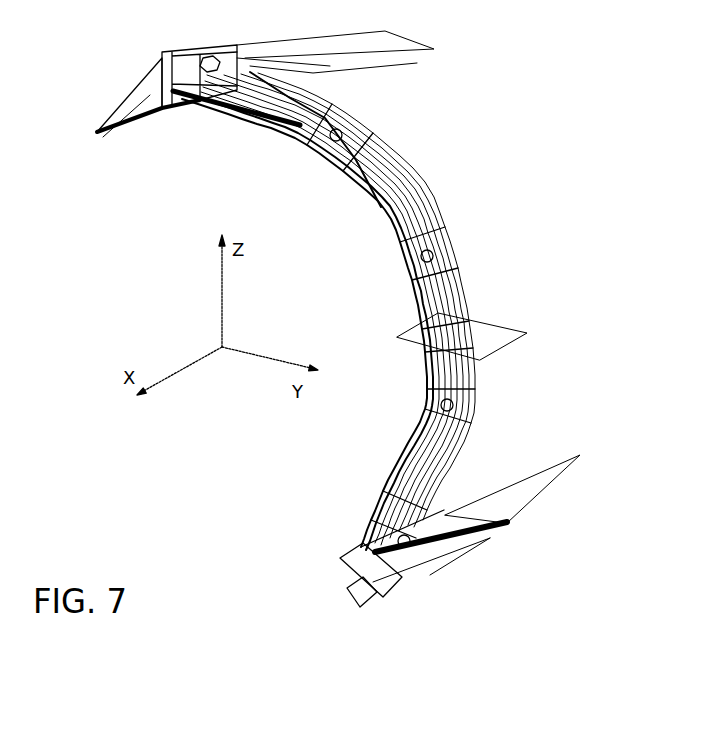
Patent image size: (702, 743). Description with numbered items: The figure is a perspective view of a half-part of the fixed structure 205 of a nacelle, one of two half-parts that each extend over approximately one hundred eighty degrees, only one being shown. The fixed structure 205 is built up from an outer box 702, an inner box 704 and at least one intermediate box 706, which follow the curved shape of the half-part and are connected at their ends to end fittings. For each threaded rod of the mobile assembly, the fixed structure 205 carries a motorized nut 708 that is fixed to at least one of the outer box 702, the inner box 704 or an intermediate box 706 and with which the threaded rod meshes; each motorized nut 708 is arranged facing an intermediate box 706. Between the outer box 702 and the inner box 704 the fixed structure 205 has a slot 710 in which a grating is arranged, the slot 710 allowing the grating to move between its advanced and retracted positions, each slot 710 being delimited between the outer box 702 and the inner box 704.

The fixed structure 205 is at (475, 106).
The outer box 702 is at (473, 412).
The inner box 704 is at (427, 433).
The intermediate box 706 is at (330, 137).
The motorized nut 708 is at (407, 252).
The slot 710 is at (250, 105).